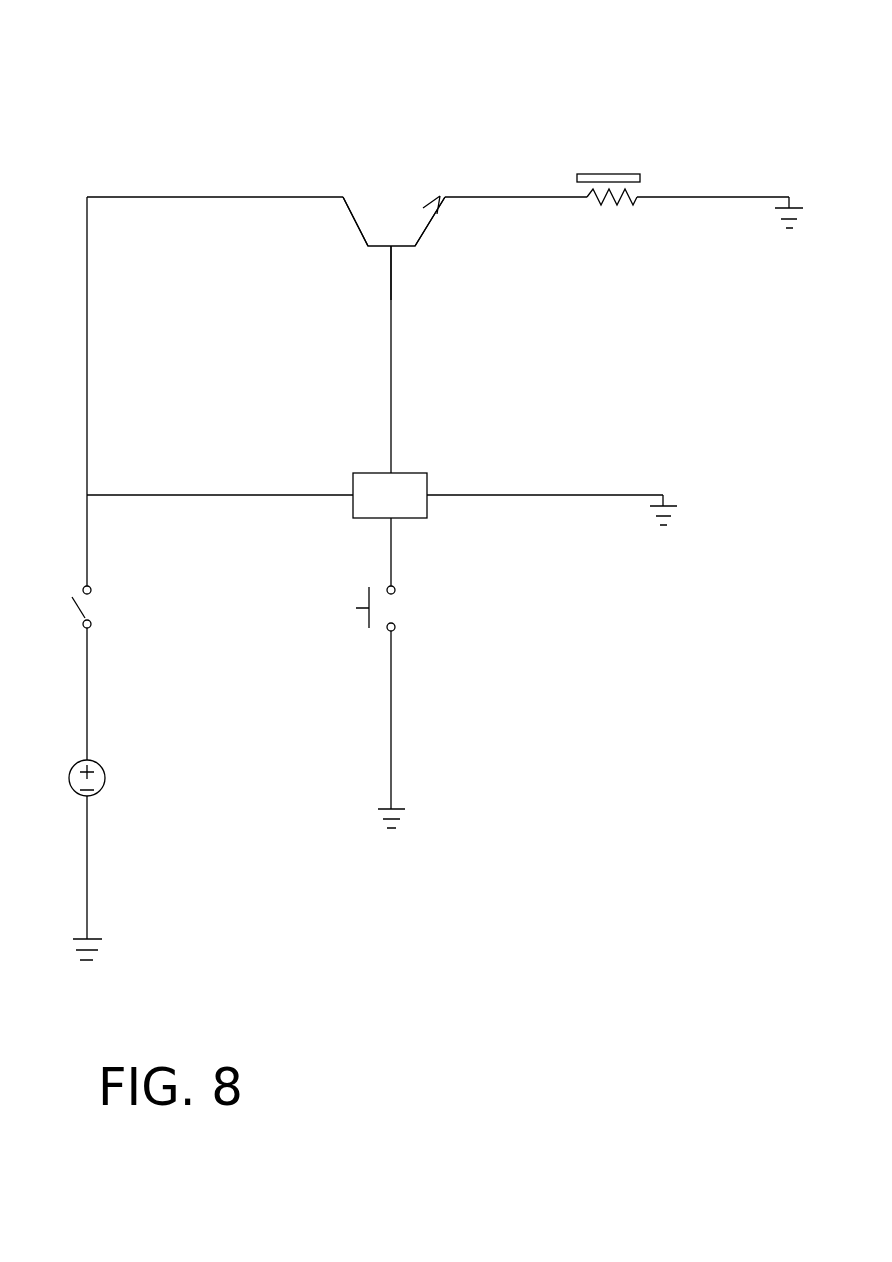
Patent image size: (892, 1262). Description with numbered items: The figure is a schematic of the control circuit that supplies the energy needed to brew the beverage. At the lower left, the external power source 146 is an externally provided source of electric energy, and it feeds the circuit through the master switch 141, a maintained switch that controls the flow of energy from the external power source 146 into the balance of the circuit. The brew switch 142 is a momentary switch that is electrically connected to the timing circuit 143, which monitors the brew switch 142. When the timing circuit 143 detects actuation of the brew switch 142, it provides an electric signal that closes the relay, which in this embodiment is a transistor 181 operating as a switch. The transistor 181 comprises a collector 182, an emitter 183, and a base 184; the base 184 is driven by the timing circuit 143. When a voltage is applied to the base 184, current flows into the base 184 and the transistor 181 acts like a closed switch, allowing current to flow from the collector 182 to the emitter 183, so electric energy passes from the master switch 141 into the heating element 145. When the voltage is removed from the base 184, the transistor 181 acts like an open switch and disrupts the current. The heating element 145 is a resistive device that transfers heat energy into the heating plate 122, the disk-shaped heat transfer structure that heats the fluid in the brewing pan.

The transistor 181 is at (397, 147).
The collector 182 is at (345, 192).
The emitter 183 is at (440, 197).
The base 184 is at (393, 287).
The heating plate 122 is at (630, 178).
The heating element 145 is at (615, 207).
The timing circuit 143 is at (428, 471).
The brew switch 142 is at (397, 608).
The master switch 141 is at (92, 603).
The external power source 146 is at (105, 776).